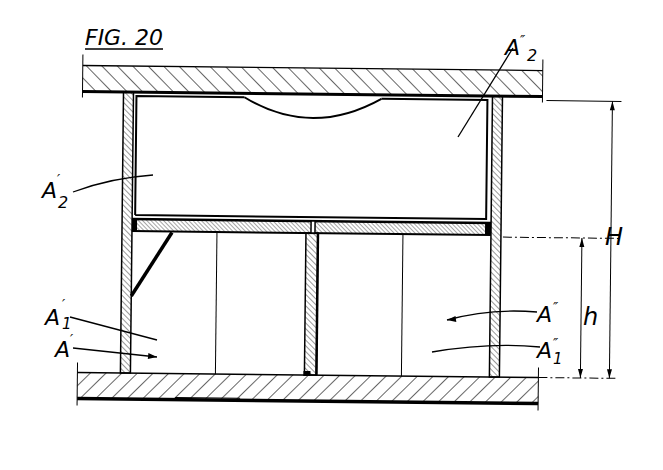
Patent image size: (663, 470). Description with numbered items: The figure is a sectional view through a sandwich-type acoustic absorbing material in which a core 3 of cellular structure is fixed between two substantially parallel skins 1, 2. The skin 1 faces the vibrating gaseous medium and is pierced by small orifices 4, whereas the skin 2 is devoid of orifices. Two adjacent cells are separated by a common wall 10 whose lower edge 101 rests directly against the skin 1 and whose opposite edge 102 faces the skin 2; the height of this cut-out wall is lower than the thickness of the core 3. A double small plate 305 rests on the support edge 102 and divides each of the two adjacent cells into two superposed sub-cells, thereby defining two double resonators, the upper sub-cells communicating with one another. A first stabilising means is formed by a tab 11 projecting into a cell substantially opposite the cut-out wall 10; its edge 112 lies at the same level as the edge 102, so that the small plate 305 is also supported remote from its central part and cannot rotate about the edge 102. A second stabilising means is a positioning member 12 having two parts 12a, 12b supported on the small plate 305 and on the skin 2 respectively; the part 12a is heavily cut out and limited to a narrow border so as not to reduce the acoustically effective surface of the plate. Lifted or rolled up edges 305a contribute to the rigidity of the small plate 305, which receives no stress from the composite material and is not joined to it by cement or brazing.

The skin 1 is at (112, 398).
The skin 2 is at (180, 78).
The core of cellular structure 3 is at (78, 158).
The small orifices 4 is at (242, 399).
The common wall 10 is at (317, 310).
The edge of the common wall 101 is at (302, 402).
The edge of the common wall 102 is at (312, 228).
The tab 11 is at (143, 263).
The edge of the tab 112 is at (147, 238).
The positioning member 12 is at (457, 180).
The part of the positioning member 12a is at (403, 240).
The part of the positioning member 12b is at (430, 118).
The small plate 305 is at (458, 240).
The lifted or rolled up edges 305a is at (500, 229).